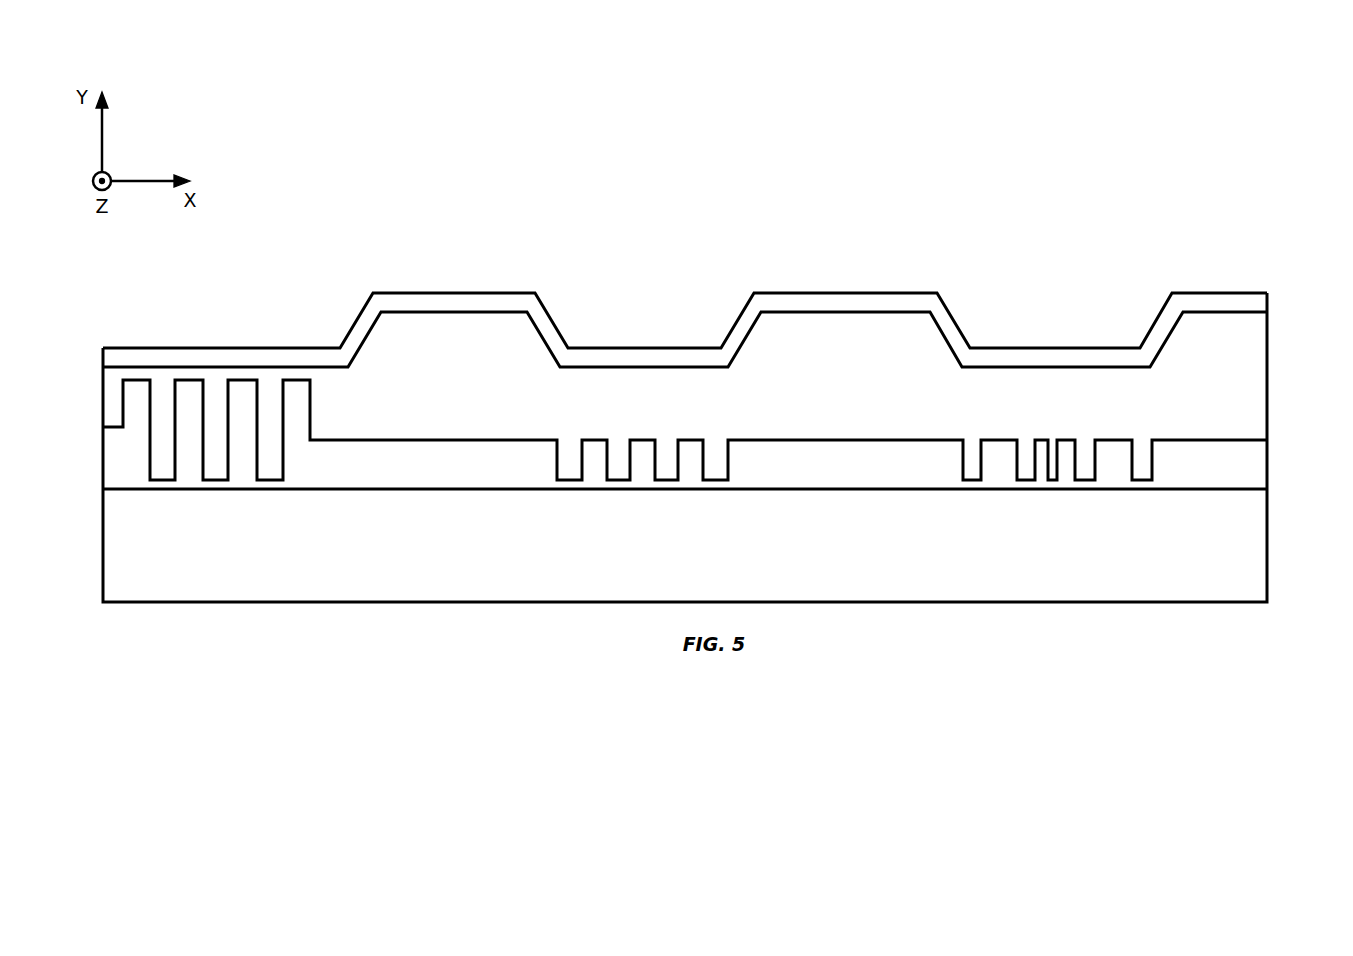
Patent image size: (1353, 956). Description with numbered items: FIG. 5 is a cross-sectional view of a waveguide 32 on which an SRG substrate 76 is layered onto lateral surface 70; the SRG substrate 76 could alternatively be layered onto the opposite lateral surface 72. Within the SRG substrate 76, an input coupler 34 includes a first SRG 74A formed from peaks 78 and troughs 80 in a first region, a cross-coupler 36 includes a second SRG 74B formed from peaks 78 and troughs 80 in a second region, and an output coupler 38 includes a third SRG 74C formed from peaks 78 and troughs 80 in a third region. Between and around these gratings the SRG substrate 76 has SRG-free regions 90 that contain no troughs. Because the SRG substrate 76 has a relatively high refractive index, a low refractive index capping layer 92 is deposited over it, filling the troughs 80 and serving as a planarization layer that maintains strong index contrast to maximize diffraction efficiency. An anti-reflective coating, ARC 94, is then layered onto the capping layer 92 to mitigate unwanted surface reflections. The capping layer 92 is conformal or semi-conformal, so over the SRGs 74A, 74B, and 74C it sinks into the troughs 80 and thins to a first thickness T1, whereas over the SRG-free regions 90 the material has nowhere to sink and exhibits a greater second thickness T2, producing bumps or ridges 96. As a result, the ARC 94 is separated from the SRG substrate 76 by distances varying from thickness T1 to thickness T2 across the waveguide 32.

The waveguide 32 is at (1262, 550).
The input coupler 34 is at (373, 287).
The cross-coupler 36 is at (752, 287).
The output coupler 38 is at (1173, 288).
The lateral surface 70 is at (126, 498).
The lateral surface 72 is at (325, 596).
The first SRG 74A is at (241, 499).
The second SRG 74B is at (635, 503).
The third SRG 74C is at (1050, 505).
The SRG substrate 76 is at (1262, 464).
The peaks 78 is at (246, 390).
The troughs 80 is at (162, 470).
The SRG-free regions 90 is at (550, 497).
The capping layer 92 is at (1262, 379).
The ARC 94 is at (1262, 301).
The bumps or ridges 96 is at (559, 313).
The first thickness T1 is at (692, 379).
The second thickness T2 is at (452, 324).